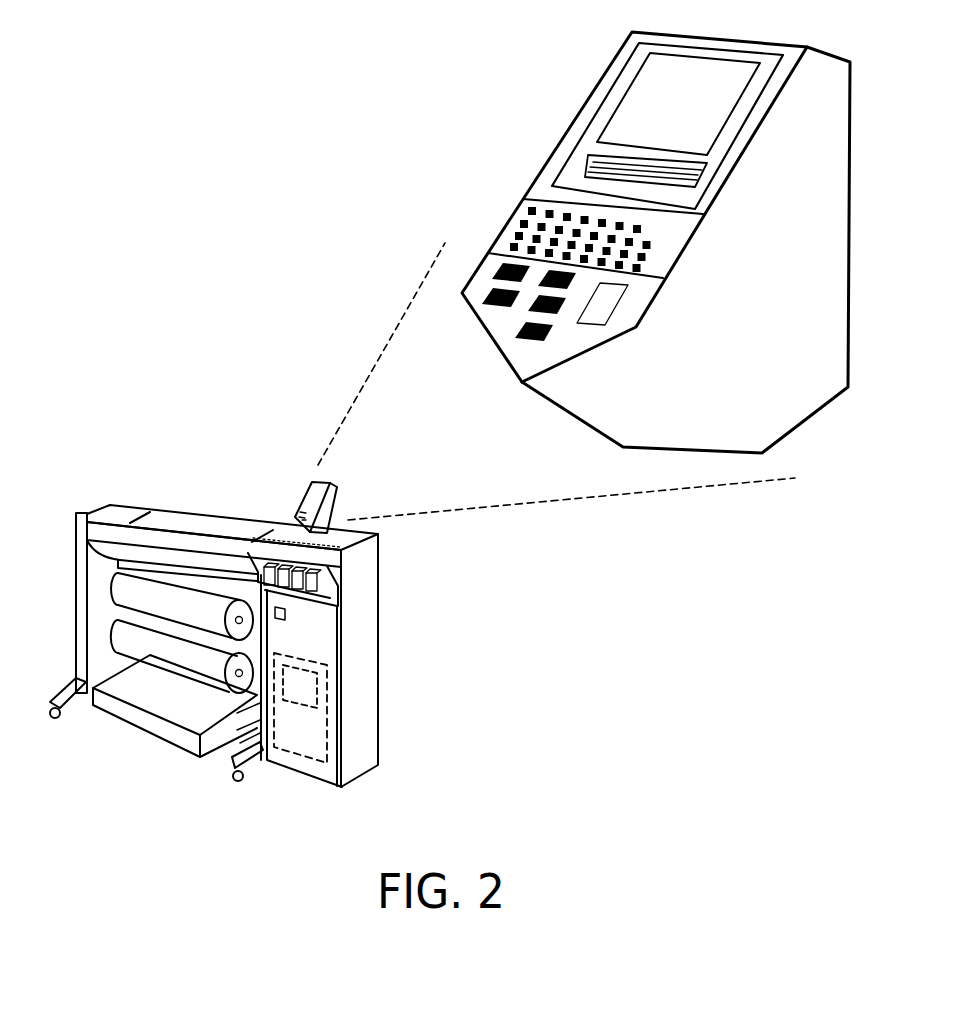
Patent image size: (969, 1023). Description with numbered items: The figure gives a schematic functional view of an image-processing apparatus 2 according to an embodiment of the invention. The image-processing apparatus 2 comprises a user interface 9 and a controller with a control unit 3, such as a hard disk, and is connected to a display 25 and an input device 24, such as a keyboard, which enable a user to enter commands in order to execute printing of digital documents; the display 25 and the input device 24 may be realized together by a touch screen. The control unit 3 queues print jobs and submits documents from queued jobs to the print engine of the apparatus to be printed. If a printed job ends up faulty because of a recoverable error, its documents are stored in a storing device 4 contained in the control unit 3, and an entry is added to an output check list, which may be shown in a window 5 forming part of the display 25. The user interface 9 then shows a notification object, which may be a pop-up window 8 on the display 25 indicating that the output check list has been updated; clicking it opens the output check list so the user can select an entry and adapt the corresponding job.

The image-processing apparatus 2 is at (428, 720).
The control unit 3 is at (308, 746).
The storing device 4 is at (298, 688).
The window 5 is at (697, 130).
The pop-up window 8 is at (563, 177).
The user interface 9 is at (312, 493).
The input device 24 is at (613, 242).
The display 25 is at (708, 187).